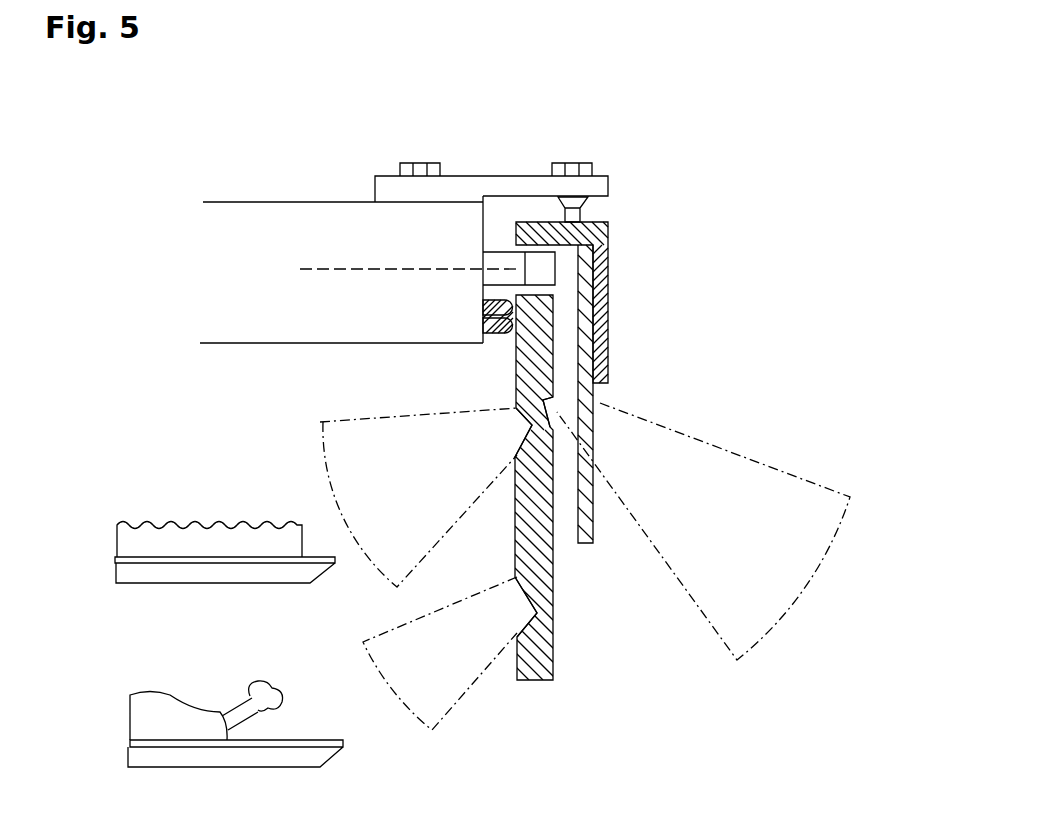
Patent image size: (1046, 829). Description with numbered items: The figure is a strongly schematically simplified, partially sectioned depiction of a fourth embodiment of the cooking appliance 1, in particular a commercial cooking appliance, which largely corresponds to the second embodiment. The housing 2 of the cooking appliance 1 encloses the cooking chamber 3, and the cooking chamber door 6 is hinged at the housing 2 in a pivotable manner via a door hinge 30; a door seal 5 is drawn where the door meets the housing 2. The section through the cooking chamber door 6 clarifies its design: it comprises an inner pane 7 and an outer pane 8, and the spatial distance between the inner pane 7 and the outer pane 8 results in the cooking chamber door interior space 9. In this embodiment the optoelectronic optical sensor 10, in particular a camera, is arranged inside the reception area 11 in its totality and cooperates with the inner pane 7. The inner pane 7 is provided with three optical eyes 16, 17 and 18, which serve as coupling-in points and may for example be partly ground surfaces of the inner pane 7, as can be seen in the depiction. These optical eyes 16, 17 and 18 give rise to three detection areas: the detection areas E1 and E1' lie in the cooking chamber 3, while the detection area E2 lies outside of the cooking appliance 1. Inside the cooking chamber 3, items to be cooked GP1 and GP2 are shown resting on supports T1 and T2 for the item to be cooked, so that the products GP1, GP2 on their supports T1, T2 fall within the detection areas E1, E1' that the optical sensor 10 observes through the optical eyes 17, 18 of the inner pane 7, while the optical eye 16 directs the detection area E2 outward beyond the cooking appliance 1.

The cooking appliance 1 is at (663, 152).
The housing 2 is at (206, 199).
The cooking chamber 3 is at (246, 419).
The door seal 5 is at (497, 332).
The cooking chamber door 6 is at (601, 405).
The inner pane 7 is at (540, 650).
The outer pane 8 is at (582, 541).
The cooking chamber door interior space 9 is at (567, 487).
The optical sensor 10 is at (541, 268).
The reception area 11 is at (566, 263).
The optical eye 16 is at (543, 400).
The optical eye 17 is at (523, 420).
The optical eye 18 is at (523, 597).
The door hinge 30 is at (517, 175).
The detection area E1 is at (378, 504).
The detection area E1' is at (440, 693).
The detection area E2 is at (827, 562).
The item to be cooked GP1 is at (133, 527).
The item to be cooked GP2 is at (148, 712).
The support for item to be cooked T1 is at (135, 573).
The support for item to be cooked T2 is at (148, 757).